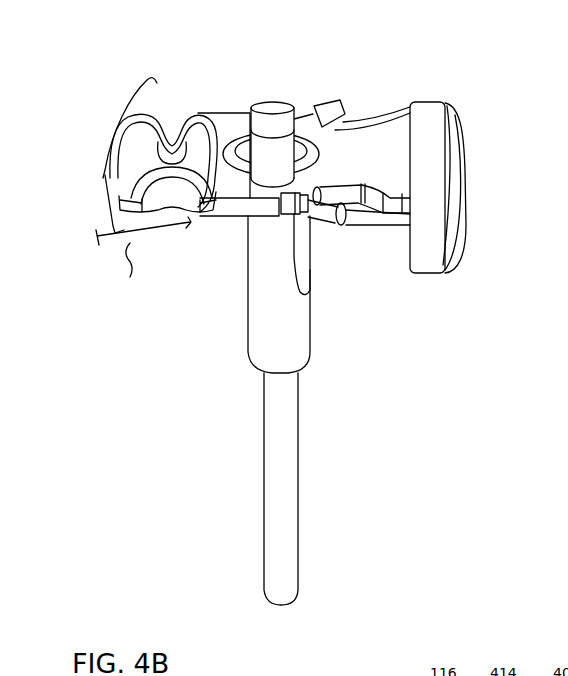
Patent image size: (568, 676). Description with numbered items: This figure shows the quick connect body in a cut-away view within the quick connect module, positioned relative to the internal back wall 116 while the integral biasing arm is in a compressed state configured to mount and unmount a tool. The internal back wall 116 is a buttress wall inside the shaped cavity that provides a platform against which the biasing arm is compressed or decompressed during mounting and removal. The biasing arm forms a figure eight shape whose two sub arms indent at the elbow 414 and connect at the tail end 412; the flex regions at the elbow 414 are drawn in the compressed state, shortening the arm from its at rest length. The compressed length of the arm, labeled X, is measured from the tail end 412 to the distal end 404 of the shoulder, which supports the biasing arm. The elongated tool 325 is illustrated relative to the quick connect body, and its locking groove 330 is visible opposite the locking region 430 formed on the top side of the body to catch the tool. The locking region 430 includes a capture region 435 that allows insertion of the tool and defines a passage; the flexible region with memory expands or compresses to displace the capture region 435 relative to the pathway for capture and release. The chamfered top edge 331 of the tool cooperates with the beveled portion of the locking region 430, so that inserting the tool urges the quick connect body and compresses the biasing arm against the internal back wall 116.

The internal back wall 116 is at (116, 206).
The elongated tool 325 is at (332, 539).
The locking groove 330 is at (252, 180).
The chamfered top edge 331 is at (280, 120).
The distal end of the shoulder 404 is at (233, 120).
The tail end 412 is at (117, 140).
The elbow 414 is at (174, 117).
The locking region 430 is at (241, 123).
The capture region 435 is at (322, 153).